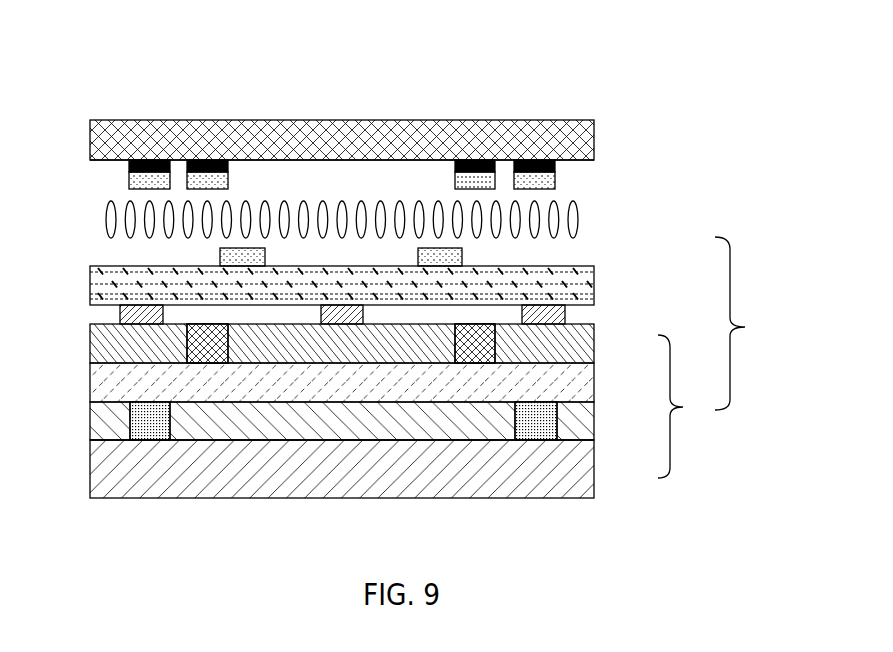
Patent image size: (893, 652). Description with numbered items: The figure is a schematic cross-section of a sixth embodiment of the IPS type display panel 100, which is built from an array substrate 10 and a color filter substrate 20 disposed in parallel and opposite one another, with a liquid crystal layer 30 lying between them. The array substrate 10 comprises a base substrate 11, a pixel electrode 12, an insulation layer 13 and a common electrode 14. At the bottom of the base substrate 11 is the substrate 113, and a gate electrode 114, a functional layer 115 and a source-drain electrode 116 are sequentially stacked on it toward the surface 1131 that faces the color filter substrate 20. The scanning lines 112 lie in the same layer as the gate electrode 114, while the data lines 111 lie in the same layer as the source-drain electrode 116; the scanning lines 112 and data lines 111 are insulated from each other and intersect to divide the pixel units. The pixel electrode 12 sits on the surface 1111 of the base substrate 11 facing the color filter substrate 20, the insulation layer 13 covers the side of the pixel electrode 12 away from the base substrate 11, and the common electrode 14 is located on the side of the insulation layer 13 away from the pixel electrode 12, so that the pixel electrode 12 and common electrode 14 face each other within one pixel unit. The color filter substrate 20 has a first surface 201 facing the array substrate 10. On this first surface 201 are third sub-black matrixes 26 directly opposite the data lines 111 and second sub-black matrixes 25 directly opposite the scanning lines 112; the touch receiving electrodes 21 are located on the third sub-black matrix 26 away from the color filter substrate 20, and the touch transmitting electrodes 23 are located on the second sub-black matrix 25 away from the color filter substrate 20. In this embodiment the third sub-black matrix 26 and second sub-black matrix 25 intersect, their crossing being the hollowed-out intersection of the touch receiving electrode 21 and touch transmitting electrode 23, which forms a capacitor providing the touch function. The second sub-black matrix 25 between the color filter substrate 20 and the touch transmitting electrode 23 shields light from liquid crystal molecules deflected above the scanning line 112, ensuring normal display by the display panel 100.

The IPS type display panel 100 is at (73, 46).
The color filter substrate 20 is at (594, 134).
The first surface 201 is at (110, 160).
The touch receiving electrode 21 is at (455, 178).
The third sub-black matrix 26 is at (490, 160).
The second sub-black matrix 25 is at (555, 166).
The touch transmitting electrode 23 is at (555, 178).
The liquid crystal layer 30 is at (105, 220).
The common electrode 14 is at (462, 259).
The insulation layer 13 is at (594, 287).
The pixel electrode 12 is at (364, 309).
The surface of the base substrate 1111 is at (117, 323).
The data line 111 is at (371, 347).
The source-drain electrode 116 is at (593, 350).
The functional layer 115 is at (594, 388).
The gate electrode 114 is at (336, 421).
The surface of the substrate 1131 is at (113, 437).
The scanning line 112 is at (594, 447).
The substrate 113 is at (594, 478).
The base substrate 11 is at (683, 406).
The array substrate 10 is at (745, 327).